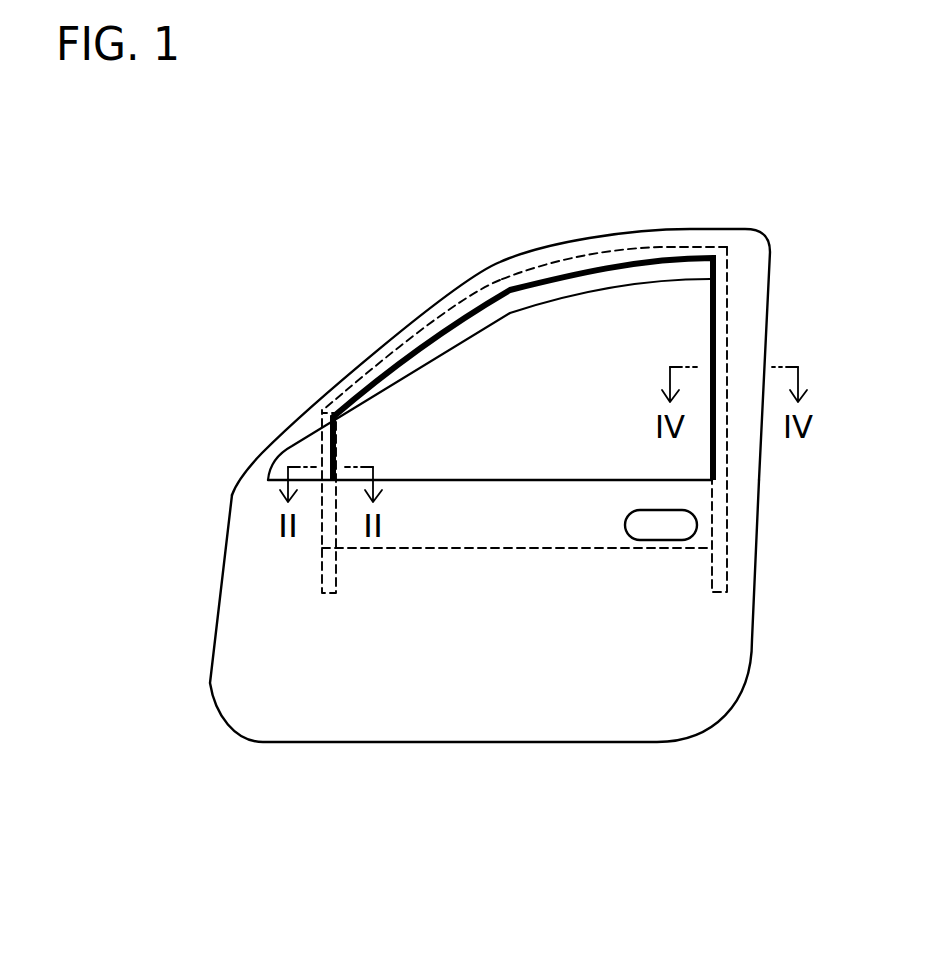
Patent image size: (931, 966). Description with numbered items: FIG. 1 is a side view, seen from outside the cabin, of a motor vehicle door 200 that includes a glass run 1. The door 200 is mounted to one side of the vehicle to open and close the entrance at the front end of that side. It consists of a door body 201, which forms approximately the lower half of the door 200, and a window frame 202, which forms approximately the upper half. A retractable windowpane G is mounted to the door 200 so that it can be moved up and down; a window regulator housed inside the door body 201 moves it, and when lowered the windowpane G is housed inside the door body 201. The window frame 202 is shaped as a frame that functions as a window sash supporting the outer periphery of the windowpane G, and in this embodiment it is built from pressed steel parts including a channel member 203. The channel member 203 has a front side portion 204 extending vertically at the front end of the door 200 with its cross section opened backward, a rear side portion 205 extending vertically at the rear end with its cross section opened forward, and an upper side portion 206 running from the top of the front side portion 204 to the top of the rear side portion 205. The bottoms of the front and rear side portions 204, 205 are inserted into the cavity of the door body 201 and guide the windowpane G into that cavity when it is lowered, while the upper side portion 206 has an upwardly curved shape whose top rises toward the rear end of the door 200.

The glass run 1 is at (527, 290).
The windowpane G is at (568, 293).
The door 200 is at (238, 343).
The door body 201 is at (440, 722).
The window frame 202 is at (483, 276).
The channel member 203 is at (397, 349).
The front side portion 204 is at (336, 575).
The rear side portion 205 is at (727, 540).
The upper side portion 206 is at (645, 247).